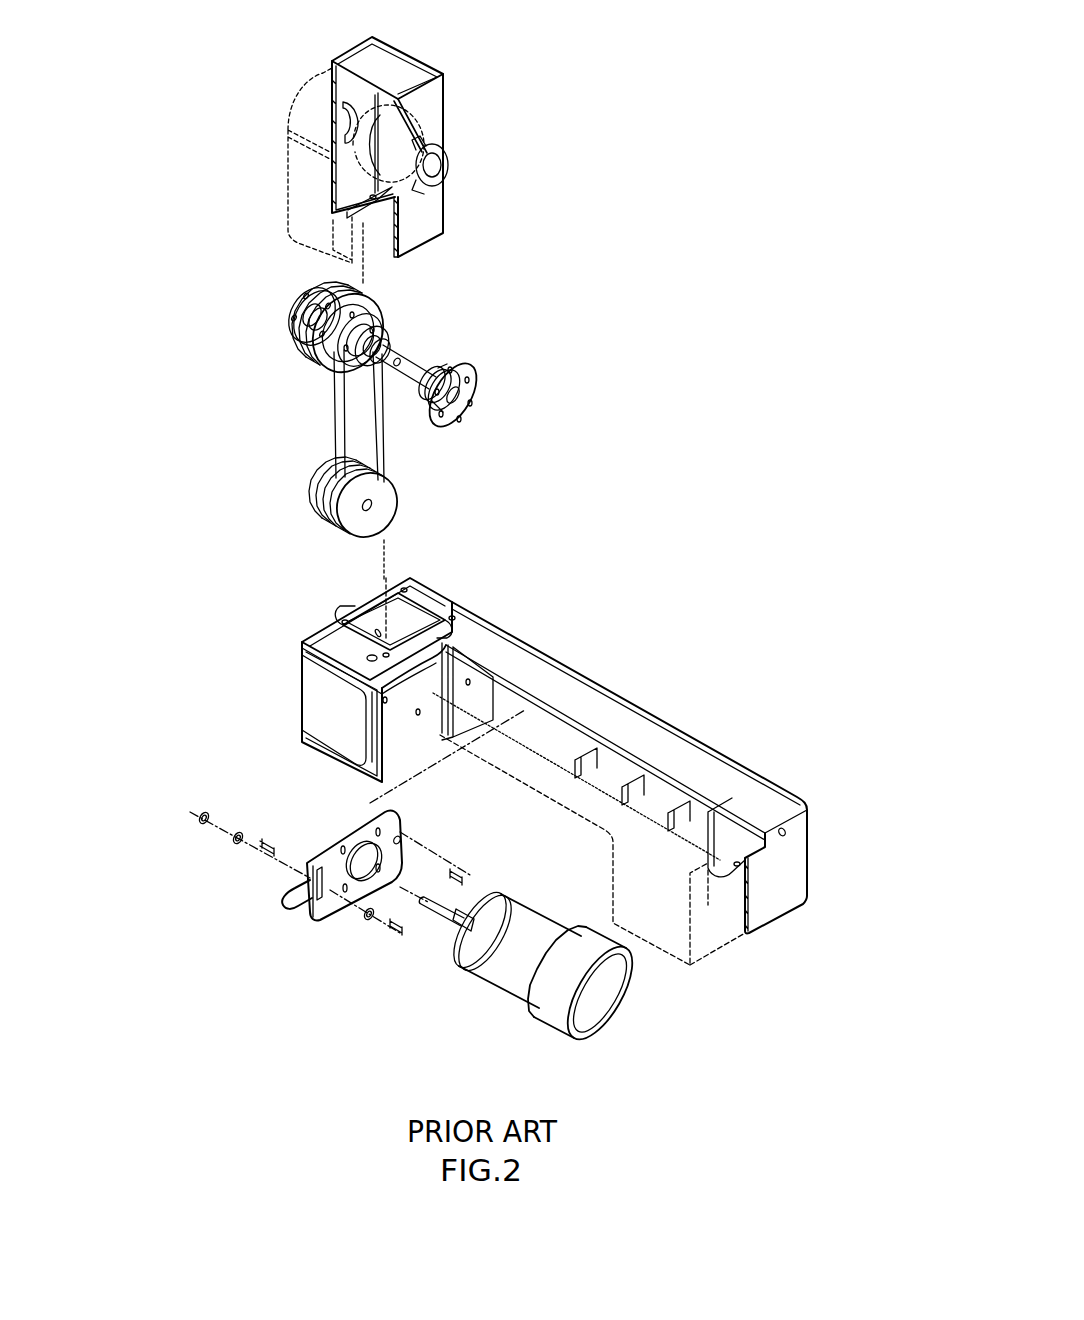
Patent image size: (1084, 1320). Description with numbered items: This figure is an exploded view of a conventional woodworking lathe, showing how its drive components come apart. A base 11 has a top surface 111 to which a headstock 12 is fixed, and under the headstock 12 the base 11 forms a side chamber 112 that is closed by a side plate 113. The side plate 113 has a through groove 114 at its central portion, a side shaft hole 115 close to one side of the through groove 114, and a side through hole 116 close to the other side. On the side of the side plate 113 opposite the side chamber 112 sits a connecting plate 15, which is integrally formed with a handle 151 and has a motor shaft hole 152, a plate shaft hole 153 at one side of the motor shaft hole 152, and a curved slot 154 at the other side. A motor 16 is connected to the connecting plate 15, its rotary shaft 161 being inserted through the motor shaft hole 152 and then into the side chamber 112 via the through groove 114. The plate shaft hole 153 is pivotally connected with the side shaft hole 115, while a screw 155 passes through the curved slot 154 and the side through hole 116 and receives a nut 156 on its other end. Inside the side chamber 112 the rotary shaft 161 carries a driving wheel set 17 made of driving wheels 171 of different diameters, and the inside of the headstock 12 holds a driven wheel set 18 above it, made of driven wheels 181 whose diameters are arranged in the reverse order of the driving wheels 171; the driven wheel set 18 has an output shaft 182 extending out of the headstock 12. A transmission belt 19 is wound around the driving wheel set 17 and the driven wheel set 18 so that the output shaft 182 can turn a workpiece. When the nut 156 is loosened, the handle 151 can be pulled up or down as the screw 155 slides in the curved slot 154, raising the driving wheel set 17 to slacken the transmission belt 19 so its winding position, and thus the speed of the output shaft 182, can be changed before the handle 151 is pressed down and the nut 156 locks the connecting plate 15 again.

The base 11 is at (775, 887).
The top surface 111 is at (578, 700).
The side chamber 112 is at (370, 620).
The side plate 113 is at (385, 777).
The through groove 114 is at (437, 693).
The side shaft hole 115 is at (465, 717).
The side through hole 116 is at (362, 733).
The headstock 12 is at (432, 98).
The connecting plate 15 is at (333, 910).
The handle 151 is at (293, 910).
The motor shaft hole 152 is at (363, 852).
The plate shaft hole 153 is at (400, 837).
The curved slot 154 is at (300, 877).
The screw 155 is at (393, 933).
The nut 156 is at (200, 818).
The motor 16 is at (603, 992).
The rotary shaft 161 is at (445, 908).
The driving wheel set 17 is at (396, 510).
The driving wheels 171 is at (350, 470).
The driven wheel set 18 is at (314, 323).
The driven wheels 181 is at (373, 298).
The output shaft 182 is at (478, 387).
The transmission belt 19 is at (338, 428).